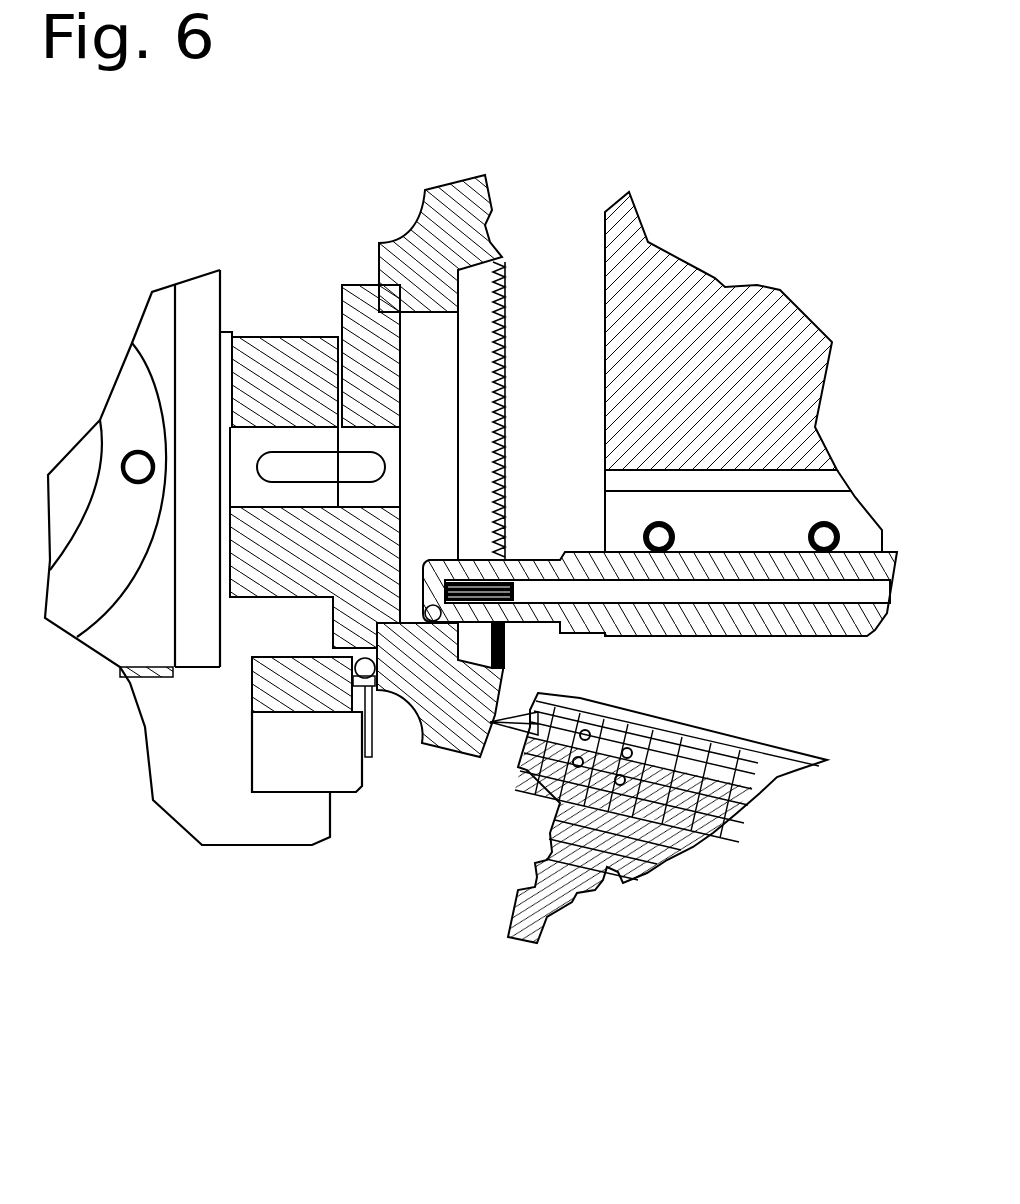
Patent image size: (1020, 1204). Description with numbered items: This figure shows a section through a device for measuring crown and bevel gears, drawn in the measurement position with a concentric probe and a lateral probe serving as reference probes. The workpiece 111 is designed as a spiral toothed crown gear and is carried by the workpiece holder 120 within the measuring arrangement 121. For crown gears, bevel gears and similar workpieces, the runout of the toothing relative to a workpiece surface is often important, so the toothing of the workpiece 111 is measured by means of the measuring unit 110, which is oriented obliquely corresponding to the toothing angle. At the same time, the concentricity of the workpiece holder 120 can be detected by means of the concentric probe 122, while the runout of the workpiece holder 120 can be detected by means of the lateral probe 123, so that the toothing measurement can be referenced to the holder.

The measuring unit 110 is at (760, 764).
The workpiece 111 is at (424, 282).
The workpiece holder 120 is at (366, 347).
The measuring arrangement 121 is at (680, 385).
The concentric probe 122 is at (433, 624).
The lateral probe 123 is at (364, 677).